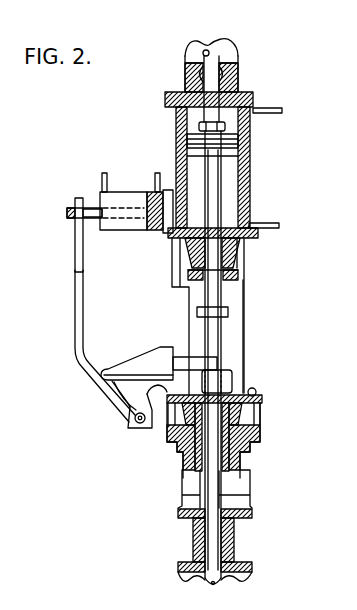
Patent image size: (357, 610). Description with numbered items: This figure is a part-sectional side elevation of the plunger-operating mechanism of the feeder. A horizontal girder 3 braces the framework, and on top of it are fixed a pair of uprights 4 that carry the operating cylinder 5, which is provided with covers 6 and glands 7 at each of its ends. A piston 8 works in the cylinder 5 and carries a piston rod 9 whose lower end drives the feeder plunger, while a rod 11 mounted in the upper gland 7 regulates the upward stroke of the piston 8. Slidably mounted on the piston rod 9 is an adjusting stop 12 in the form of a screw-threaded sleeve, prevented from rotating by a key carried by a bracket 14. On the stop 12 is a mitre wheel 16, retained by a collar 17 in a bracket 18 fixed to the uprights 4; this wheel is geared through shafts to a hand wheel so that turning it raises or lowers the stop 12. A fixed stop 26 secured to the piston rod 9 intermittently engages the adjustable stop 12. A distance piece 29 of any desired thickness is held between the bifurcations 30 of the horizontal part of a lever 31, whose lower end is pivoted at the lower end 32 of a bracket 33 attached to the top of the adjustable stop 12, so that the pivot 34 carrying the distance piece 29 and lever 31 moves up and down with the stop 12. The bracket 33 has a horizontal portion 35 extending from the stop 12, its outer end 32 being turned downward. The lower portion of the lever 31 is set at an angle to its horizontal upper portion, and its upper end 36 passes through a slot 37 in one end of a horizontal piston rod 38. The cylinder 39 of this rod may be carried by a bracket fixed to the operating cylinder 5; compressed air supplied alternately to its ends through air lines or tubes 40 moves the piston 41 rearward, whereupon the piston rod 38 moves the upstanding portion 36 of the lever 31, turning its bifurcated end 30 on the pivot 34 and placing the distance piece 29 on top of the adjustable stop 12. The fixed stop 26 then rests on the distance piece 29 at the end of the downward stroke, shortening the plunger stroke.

The horizontal girder 3 is at (252, 549).
The uprights 4 is at (246, 297).
The operating cylinder 5 is at (251, 193).
The covers 6 is at (255, 102).
The glands 7 is at (231, 64).
The piston 8 is at (239, 143).
The piston rod 9 is at (223, 333).
The rod 11 is at (204, 52).
The adjusting stop 12 is at (250, 503).
The bracket 14 is at (263, 398).
The mitre wheel 16 is at (258, 418).
The collar 17 is at (190, 462).
The bracket 18 is at (262, 432).
The fixed stop 26 is at (197, 312).
The distance piece 29 is at (218, 365).
The bifurcations 30 is at (171, 349).
The lever 31 is at (111, 370).
The lower end of bracket 32 is at (135, 405).
The bracket 33 is at (236, 387).
The pivot 34 is at (141, 429).
The horizontal portion 35 is at (143, 383).
The upper end of lever 36 is at (75, 207).
The slot 37 is at (69, 215).
The horizontal piston rod 38 is at (92, 208).
The cylinder 39 is at (79, 262).
The air lines or tubes 40 is at (152, 181).
The piston 41 is at (145, 231).